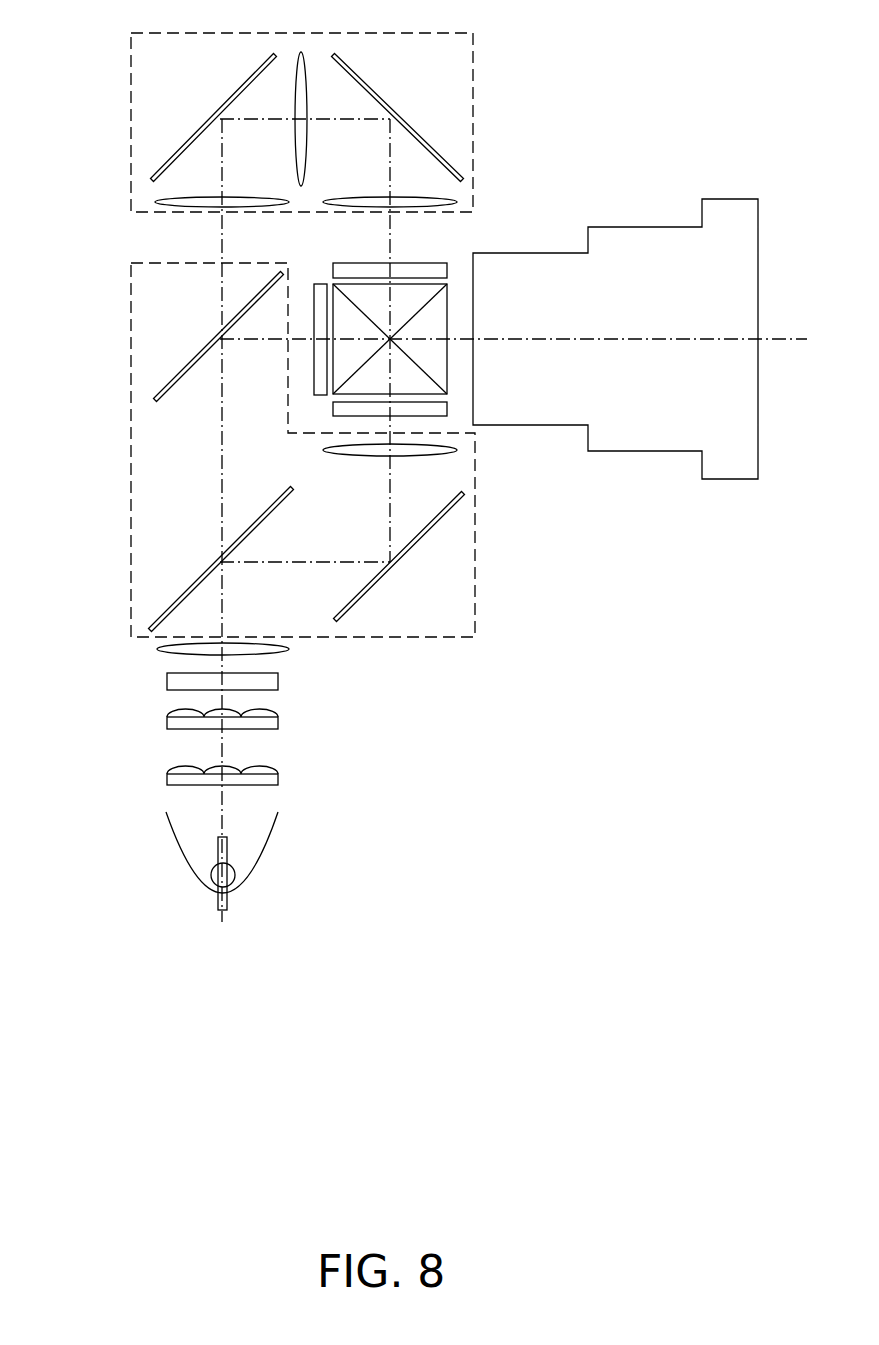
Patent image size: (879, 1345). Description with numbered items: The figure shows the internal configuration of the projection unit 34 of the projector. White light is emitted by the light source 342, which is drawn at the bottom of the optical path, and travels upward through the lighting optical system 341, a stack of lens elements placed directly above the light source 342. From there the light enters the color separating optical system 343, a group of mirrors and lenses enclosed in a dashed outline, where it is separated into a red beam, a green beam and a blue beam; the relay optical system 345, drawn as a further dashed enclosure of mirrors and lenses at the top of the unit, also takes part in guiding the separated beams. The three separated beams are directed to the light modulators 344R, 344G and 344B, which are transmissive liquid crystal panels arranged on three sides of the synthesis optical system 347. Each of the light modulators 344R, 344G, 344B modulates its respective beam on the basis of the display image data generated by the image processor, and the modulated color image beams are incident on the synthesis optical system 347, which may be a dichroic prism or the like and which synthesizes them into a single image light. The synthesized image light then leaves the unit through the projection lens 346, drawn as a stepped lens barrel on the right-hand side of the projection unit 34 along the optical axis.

The projection unit 34 is at (562, 65).
The relay optical system 345 is at (131, 120).
The color separating optical system 343 is at (475, 580).
The light modulator 344G is at (313, 285).
The light modulator 344B is at (375, 263).
The light modulator 344R is at (340, 417).
The synthesis optical system 347 is at (450, 295).
The projection lens 346 is at (725, 199).
The lighting optical system 341 is at (327, 645).
The light source 342 is at (268, 850).